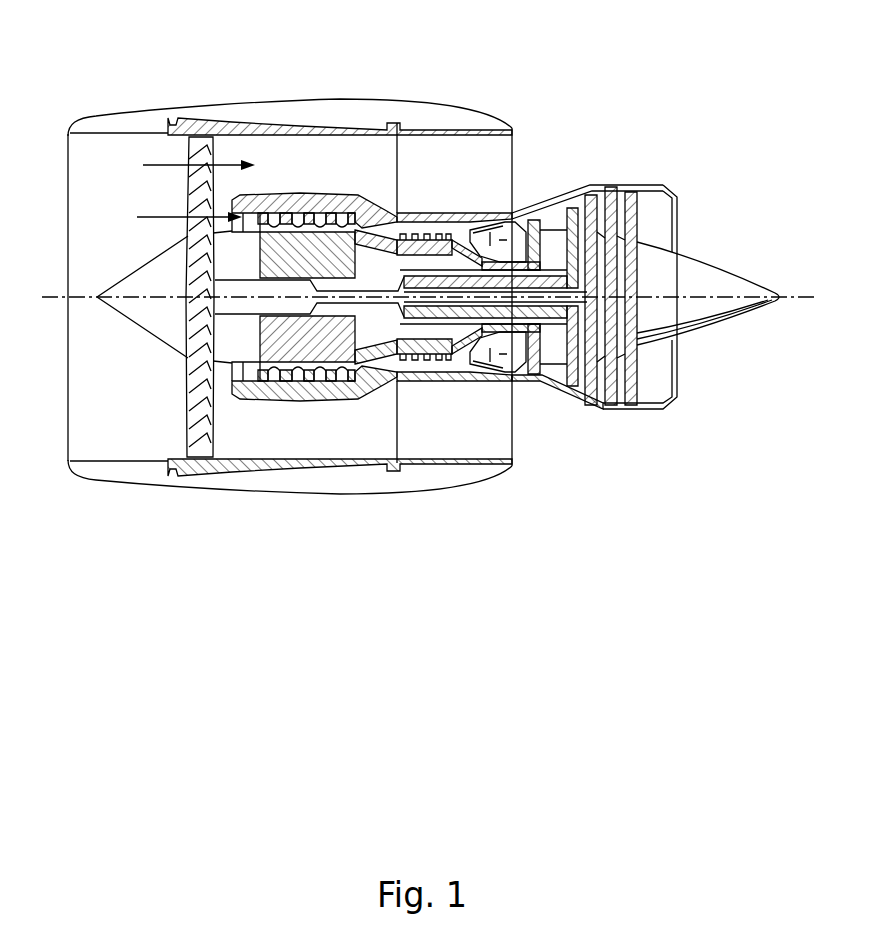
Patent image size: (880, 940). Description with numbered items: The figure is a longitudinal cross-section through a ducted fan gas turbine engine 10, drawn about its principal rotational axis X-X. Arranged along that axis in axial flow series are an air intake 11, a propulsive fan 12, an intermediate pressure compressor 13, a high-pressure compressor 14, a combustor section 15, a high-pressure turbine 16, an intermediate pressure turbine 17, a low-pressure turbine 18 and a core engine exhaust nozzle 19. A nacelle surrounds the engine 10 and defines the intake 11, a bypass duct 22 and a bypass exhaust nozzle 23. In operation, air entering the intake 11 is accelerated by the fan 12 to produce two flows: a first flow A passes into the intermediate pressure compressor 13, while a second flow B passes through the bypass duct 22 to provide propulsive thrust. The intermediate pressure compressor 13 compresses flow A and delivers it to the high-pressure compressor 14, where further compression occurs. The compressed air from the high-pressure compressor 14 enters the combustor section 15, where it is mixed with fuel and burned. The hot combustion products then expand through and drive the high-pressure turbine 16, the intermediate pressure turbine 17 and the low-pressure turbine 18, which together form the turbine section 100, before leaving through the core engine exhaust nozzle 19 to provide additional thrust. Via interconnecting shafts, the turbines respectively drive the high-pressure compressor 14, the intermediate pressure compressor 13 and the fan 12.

The ducted fan gas turbine engine 10 is at (433, 251).
The air intake 11 is at (118, 134).
The propulsive fan 12 is at (188, 413).
The intermediate pressure compressor 13 is at (318, 372).
The high-pressure compressor 14 is at (427, 236).
The combustor section 15 is at (455, 372).
The high-pressure turbine 16 is at (532, 374).
The intermediate pressure turbine 17 is at (553, 207).
The low-pressure turbine 18 is at (580, 411).
The core engine exhaust nozzle 19 is at (668, 186).
The bypass duct 22 is at (483, 169).
The bypass exhaust nozzle 23 is at (513, 126).
The turbine section 100 is at (577, 178).